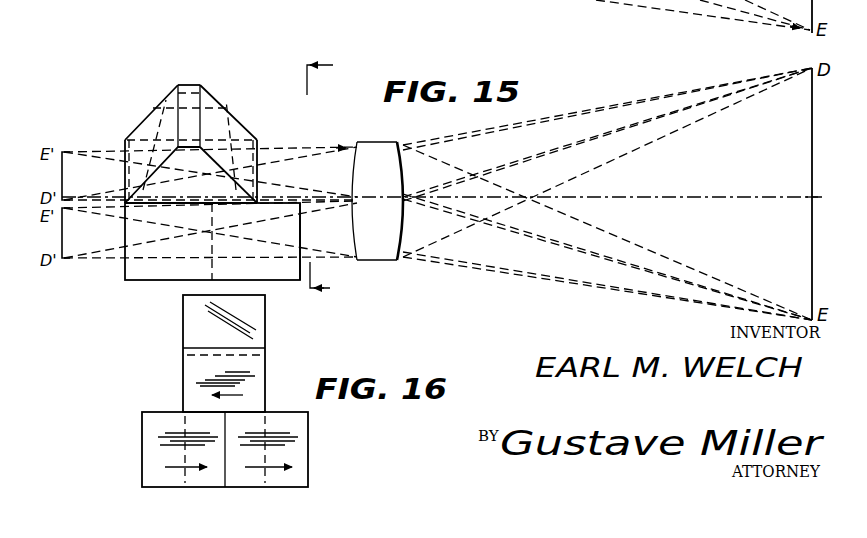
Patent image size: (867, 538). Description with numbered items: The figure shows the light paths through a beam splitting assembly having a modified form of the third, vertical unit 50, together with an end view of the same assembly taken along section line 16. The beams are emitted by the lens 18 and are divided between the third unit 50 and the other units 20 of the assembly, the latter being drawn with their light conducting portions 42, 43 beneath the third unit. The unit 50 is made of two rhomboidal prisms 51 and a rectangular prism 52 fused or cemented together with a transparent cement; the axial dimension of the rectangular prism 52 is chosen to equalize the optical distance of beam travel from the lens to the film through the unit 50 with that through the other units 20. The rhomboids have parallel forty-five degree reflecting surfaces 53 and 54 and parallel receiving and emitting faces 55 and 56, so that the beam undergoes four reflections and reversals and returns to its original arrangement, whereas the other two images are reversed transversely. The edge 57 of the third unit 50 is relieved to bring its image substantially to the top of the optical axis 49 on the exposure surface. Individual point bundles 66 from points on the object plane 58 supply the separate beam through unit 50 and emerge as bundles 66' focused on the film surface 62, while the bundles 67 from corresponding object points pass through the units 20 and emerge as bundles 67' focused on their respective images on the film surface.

In FIG. 15, the section line 16 is at (333, 179).
In FIG. 15, the lens 18 is at (406, 264).
In FIG. 15, the other units 20 is at (217, 264).
In FIG. 16, the other units 20 is at (140, 447).
In FIG. 15, the light conducting rod 42 is at (125, 245).
In FIG. 15, the light conducting rod 43 is at (303, 229).
In FIG. 15, the optical axis 49 is at (715, 197).
In FIG. 15, the third unit 50 is at (202, 101).
In FIG. 16, the third unit 50 is at (239, 355).
In FIG. 15, the rhomboidal prisms 51 is at (180, 97).
In FIG. 16, the rhomboidal prisms 51 is at (183, 362).
In FIG. 15, the rectangular prism 52 is at (186, 85).
In FIG. 15, the reflecting surface 53 is at (209, 161).
In FIG. 15, the reflecting surface 54 is at (145, 122).
In FIG. 16, the reflecting surface 54 is at (197, 312).
In FIG. 15, the receiving face 55 is at (258, 143).
In FIG. 16, the receiving face 55 is at (192, 380).
In FIG. 15, the emitting face 56 is at (123, 150).
In FIG. 15, the edge 57 is at (262, 200).
In FIG. 16, the edge 57 is at (185, 415).
In FIG. 15, the screen / object plane 58 is at (809, 151).
In FIG. 15, the film surface 62 is at (64, 151).
In FIG. 15, the point bundles 66 is at (607, 191).
In FIG. 15, the bundles 67 is at (607, 199).
In FIG. 15, the emerging bundles 66' is at (210, 173).
In FIG. 15, the emerging bundles 67' is at (210, 229).